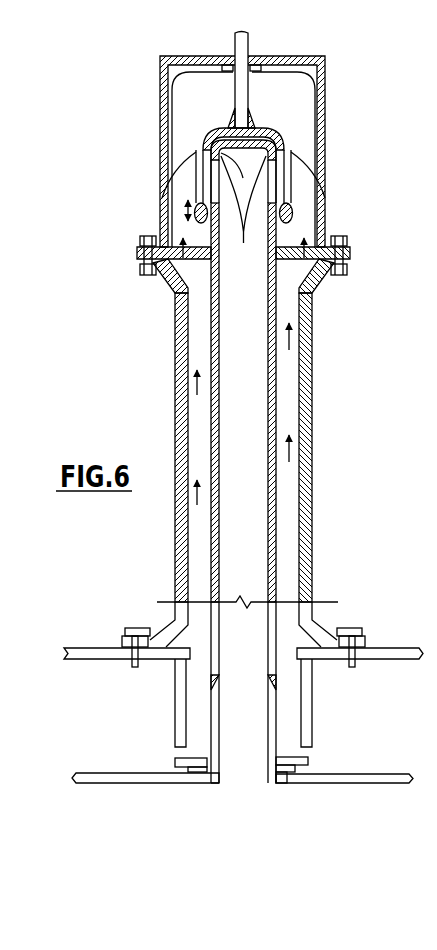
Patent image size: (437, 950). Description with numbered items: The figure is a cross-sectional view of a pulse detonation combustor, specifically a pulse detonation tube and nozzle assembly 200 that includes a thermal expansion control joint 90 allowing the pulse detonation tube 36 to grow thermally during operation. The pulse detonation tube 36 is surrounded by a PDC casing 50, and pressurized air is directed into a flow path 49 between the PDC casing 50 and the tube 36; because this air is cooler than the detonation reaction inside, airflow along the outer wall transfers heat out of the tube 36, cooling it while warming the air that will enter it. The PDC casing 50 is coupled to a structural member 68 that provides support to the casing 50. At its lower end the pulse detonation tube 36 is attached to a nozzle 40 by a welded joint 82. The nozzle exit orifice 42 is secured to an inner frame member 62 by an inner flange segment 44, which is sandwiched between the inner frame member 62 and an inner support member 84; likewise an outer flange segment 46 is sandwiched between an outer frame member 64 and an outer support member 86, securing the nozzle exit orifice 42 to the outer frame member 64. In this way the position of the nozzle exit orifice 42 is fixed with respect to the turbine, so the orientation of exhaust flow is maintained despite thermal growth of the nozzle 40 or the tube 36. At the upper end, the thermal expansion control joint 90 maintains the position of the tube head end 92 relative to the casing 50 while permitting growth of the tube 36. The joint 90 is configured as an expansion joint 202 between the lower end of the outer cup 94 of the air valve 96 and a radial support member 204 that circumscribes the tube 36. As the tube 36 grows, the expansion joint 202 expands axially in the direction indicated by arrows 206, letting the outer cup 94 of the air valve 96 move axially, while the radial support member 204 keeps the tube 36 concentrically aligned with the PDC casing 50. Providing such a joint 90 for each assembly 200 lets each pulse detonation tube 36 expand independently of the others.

The pulse detonation tube and nozzle assembly 200 is at (87, 214).
The tube head end 92 is at (300, 124).
The air valve 96 is at (187, 113).
The outer cup 94 is at (266, 127).
The thermal expansion control joint 90 is at (293, 233).
The arrows 206 is at (195, 195).
The expansion joint 202 is at (198, 288).
The radial support member 204 is at (310, 247).
The pulse detonation tube 36 is at (276, 397).
The welded joint 82 is at (266, 688).
The PDC casing 50 is at (312, 435).
The flow path 49 is at (289, 335).
The structural member 68 is at (385, 650).
The nozzle 40 is at (279, 724).
The outer support member 86 is at (178, 760).
The outer flange segment 46 is at (200, 770).
The inner support member 84 is at (300, 753).
The inner flange segment 44 is at (283, 775).
The outer frame member 64 is at (168, 782).
The inner frame member 62 is at (355, 778).
The nozzle exit orifice 42 is at (225, 784).